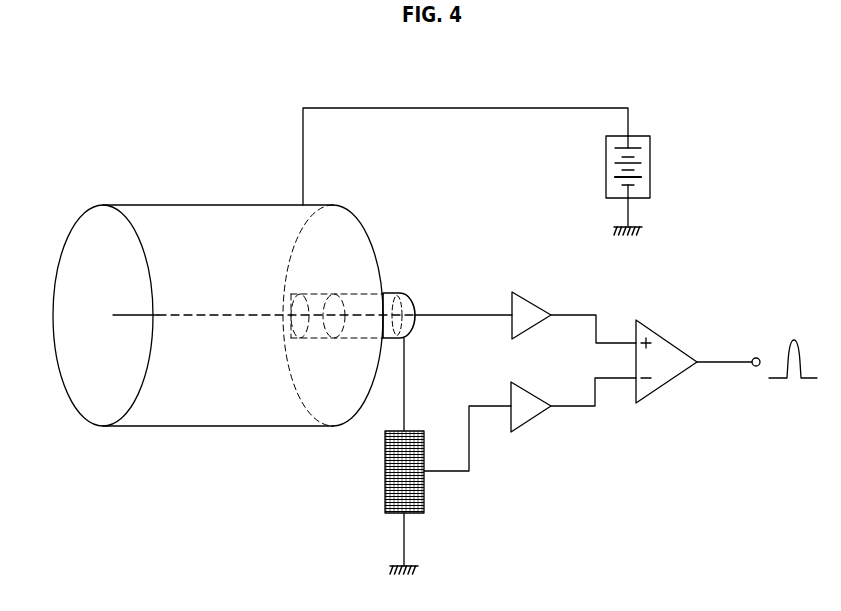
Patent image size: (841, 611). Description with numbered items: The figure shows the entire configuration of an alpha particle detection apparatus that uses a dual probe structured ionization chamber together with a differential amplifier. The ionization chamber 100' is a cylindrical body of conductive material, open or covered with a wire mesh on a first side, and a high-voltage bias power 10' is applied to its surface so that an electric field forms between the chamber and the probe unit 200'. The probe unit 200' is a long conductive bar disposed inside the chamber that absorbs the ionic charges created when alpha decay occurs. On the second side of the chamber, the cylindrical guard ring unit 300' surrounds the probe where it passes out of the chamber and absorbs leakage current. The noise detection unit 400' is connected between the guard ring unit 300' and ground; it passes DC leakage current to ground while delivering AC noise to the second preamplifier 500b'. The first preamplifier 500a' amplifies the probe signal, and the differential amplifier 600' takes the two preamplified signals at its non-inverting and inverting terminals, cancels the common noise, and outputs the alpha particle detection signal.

The bias power 10' is at (523, 171).
The ionization chamber 100' is at (234, 366).
The probe unit 200' is at (100, 234).
The guard ring unit 300' is at (447, 275).
The noise detection unit 400' is at (398, 456).
The first preamplifier 500a' is at (574, 278).
The second preamplifier 500b' is at (573, 441).
The differential amplifier 600' is at (726, 327).